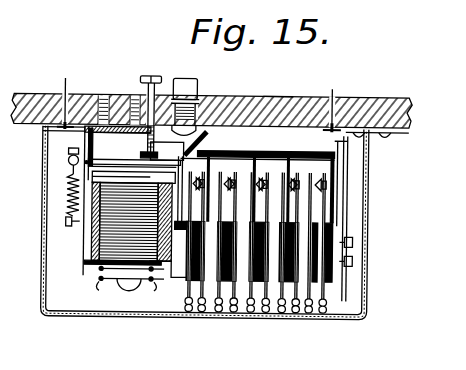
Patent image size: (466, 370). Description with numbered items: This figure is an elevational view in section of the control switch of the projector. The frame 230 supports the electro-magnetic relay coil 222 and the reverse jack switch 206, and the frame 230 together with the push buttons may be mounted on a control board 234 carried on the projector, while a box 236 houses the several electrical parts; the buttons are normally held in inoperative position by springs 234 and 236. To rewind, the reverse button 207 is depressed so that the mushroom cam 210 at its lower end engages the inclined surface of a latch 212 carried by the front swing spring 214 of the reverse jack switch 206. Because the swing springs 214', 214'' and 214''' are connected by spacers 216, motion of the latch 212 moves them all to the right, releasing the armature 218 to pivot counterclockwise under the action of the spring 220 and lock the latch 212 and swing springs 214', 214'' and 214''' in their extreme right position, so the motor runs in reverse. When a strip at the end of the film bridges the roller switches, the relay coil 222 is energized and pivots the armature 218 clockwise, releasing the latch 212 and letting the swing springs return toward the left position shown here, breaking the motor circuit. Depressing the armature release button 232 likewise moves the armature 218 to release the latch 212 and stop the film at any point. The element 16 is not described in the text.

The mounting bolt 16 is at (199, 117).
The reverse jack switch 206 is at (355, 226).
The reverse button 207 is at (179, 83).
The mushroom cam 210 is at (204, 130).
The latch 212 is at (277, 100).
The front swing spring 214 is at (254, 230).
The swing spring 214' is at (234, 220).
The swing spring 214'' is at (278, 220).
The swing spring 214''' is at (356, 230).
The spacers 216 is at (315, 158).
The armature 218 is at (98, 186).
The spring 220 is at (70, 184).
The electro-magnetic relay coil 222 is at (102, 236).
The frame 230 is at (92, 147).
The armature release button 232 is at (149, 77).
The control board 234 is at (200, 98).
The box 236 is at (141, 95).